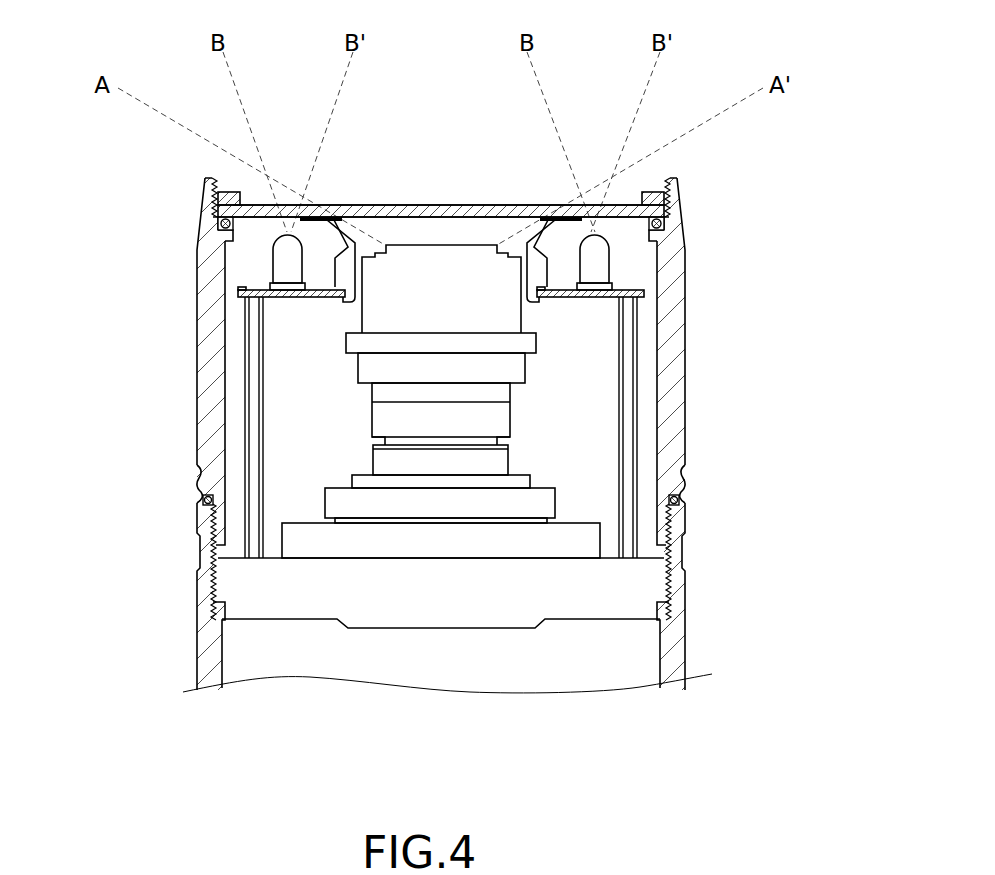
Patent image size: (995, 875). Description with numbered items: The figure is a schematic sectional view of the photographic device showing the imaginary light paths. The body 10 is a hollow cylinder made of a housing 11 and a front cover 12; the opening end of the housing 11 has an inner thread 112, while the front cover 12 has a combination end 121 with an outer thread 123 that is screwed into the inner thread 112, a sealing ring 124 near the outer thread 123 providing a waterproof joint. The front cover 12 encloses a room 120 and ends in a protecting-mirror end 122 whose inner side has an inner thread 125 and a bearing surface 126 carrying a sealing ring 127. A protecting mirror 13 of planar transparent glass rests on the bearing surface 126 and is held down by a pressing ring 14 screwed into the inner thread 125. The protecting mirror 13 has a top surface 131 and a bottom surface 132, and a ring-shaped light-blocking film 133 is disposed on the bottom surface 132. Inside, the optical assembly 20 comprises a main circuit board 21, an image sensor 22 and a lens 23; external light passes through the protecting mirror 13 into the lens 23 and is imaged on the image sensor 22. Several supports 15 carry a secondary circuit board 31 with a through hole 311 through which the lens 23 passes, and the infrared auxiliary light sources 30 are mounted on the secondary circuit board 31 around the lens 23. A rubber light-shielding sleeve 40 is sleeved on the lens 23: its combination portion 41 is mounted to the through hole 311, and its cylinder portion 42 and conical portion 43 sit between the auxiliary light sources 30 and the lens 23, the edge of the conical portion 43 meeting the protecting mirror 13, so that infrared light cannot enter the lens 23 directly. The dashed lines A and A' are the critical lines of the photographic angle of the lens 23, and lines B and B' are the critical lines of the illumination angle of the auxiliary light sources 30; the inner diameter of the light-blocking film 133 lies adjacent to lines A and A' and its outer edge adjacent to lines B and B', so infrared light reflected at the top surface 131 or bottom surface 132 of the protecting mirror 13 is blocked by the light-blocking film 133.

The body 10 is at (128, 481).
The housing 11 is at (680, 660).
The inner thread 112 is at (672, 573).
The front cover 12 is at (203, 303).
The room 120 is at (610, 392).
The combination end 121 is at (712, 478).
The protecting-mirror end 122 is at (712, 196).
The outer thread 123 is at (672, 545).
The sealing ring 124 is at (678, 501).
The inner thread 125 is at (672, 178).
The bearing surface 126 is at (233, 238).
The sealing ring 127 is at (218, 222).
The protecting mirror 13 is at (512, 198).
The top surface 131 is at (482, 207).
The bottom surface 132 is at (458, 225).
The light-blocking film 133 is at (540, 217).
The pressing ring 14 is at (229, 193).
The supports 15 is at (250, 354).
The optical assembly 20 is at (448, 440).
The main circuit board 21 is at (584, 530).
The image sensor 22 is at (545, 492).
The lens 23 is at (508, 323).
The auxiliary light sources 30 is at (628, 266).
The secondary circuit board 31 is at (588, 298).
The through hole 311 is at (547, 302).
The light-shielding sleeve 40 is at (366, 231).
The combination portion 41 is at (352, 280).
The cylinder portion 42 is at (343, 262).
The conical portion 43 is at (356, 217).